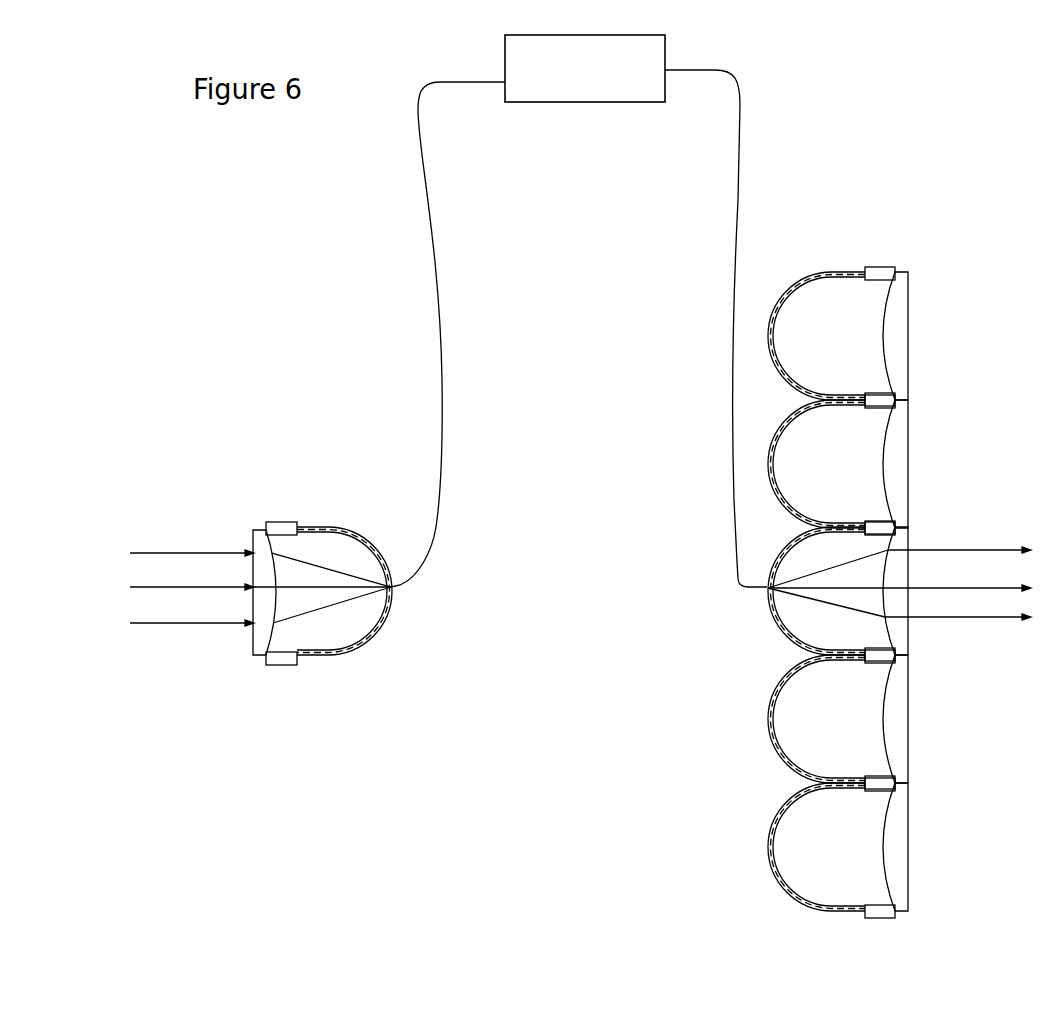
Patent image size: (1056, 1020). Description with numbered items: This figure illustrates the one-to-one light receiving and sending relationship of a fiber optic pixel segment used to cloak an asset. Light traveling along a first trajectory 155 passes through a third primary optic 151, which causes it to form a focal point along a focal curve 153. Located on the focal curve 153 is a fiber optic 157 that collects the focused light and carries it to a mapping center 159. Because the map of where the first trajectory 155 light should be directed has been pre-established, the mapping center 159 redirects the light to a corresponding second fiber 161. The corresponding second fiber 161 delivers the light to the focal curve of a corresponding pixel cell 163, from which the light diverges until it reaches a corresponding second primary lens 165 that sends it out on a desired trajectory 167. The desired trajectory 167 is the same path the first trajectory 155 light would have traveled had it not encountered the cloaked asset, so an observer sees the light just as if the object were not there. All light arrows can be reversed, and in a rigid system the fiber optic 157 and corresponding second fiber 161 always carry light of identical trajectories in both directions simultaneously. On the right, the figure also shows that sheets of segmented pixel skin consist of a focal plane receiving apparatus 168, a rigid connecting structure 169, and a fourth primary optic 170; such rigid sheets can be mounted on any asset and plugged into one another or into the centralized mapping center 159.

The third primary optic 151 is at (265, 657).
The focal curve 153 is at (370, 636).
The first trajectory 155 is at (198, 623).
The fiber optic 157 is at (436, 527).
The mapping center 159 is at (590, 103).
The corresponding second fiber 161 is at (733, 498).
The corresponding pixel cell 163 is at (790, 638).
The corresponding second primary lens 165 is at (908, 543).
The desired trajectory 167 is at (977, 617).
The focal plane receiving apparatus 168 is at (817, 272).
The rigid connecting structure 169 is at (880, 266).
The fourth primary optic 170 is at (906, 262).